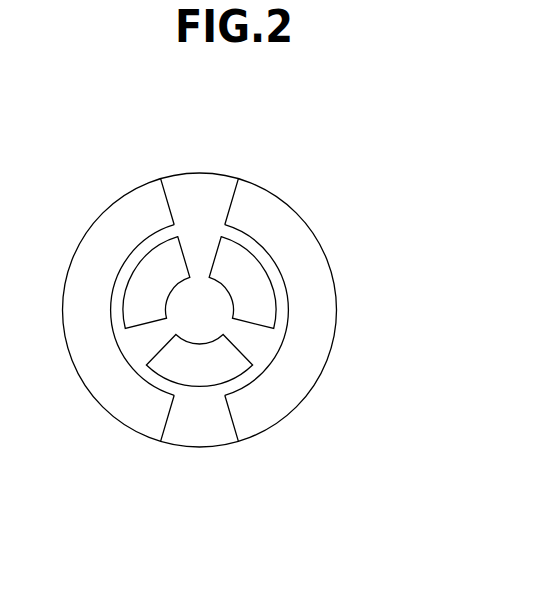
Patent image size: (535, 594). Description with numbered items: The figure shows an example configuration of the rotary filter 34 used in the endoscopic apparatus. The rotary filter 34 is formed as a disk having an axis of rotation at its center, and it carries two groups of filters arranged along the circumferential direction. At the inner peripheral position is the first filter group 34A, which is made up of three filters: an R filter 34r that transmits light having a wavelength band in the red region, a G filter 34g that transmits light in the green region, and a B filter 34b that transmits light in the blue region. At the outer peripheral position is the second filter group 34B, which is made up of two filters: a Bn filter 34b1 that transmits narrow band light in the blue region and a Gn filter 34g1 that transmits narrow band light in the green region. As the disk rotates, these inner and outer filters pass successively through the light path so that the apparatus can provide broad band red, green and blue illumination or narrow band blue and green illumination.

The rotary filter 34 is at (342, 411).
The first filter group 34A is at (82, 100).
The R filter 34r is at (176, 262).
The G filter 34g is at (196, 346).
The B filter 34b is at (224, 260).
The second filter group 34B is at (278, 513).
The Bn filter 34b1 is at (138, 422).
The Gn filter 34g1 is at (267, 413).